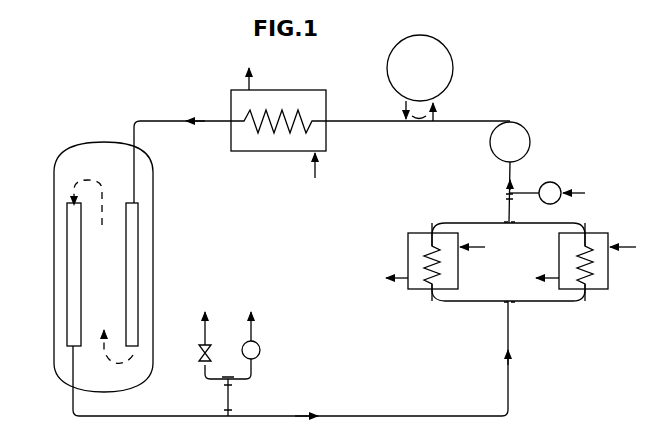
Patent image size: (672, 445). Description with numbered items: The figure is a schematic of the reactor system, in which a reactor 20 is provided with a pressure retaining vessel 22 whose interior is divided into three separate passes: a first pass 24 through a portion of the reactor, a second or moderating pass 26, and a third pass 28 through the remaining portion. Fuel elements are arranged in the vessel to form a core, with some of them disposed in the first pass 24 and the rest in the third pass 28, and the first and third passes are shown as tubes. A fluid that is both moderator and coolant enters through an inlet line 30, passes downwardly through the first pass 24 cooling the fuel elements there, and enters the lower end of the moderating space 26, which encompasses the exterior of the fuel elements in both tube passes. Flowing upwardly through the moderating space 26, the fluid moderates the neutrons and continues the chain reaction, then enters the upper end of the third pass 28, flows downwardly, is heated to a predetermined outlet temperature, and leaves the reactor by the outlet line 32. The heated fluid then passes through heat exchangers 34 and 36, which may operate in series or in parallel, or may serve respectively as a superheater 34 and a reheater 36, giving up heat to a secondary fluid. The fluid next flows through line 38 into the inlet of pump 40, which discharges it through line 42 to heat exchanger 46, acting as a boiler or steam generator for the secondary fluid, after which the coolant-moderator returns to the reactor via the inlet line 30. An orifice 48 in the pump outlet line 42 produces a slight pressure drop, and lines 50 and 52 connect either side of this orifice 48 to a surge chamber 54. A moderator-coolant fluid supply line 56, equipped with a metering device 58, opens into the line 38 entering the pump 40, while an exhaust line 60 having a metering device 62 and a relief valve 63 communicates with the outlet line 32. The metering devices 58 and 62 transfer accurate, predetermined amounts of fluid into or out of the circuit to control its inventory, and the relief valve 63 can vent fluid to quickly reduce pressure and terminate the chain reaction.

The reactor 20 is at (110, 267).
The pressure retaining vessel 22 is at (54, 250).
The first pass 24 is at (132, 288).
The moderating pass 26 is at (111, 282).
The third pass 28 is at (74, 301).
The inlet line 30 is at (165, 122).
The outlet line 32 is at (345, 416).
The heat exchanger 34 is at (410, 258).
The heat exchanger 36 is at (602, 270).
The line 38 is at (508, 206).
The pump 40 is at (510, 131).
The line 42 is at (472, 123).
The heat exchanger 46 is at (274, 143).
The orifice 48 is at (419, 126).
The line 50 is at (438, 112).
The line 52 is at (396, 118).
The surge chamber 54 is at (432, 77).
The moderator-coolant fluid supply line 56 is at (529, 191).
The metering device 58 is at (554, 188).
The exhaust line 60 is at (228, 398).
The metering device 62 is at (259, 349).
The relief valve 63 is at (200, 358).